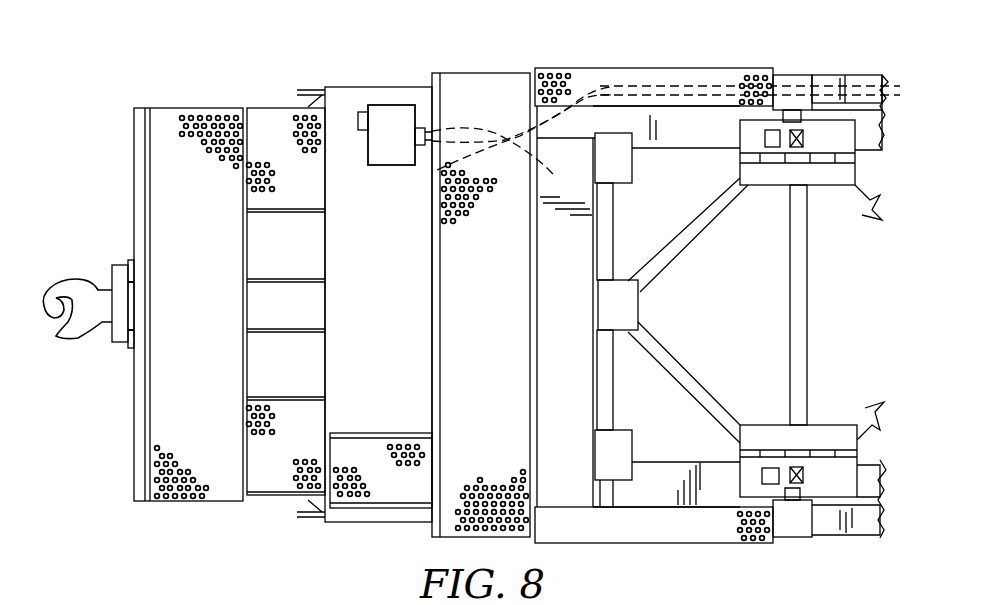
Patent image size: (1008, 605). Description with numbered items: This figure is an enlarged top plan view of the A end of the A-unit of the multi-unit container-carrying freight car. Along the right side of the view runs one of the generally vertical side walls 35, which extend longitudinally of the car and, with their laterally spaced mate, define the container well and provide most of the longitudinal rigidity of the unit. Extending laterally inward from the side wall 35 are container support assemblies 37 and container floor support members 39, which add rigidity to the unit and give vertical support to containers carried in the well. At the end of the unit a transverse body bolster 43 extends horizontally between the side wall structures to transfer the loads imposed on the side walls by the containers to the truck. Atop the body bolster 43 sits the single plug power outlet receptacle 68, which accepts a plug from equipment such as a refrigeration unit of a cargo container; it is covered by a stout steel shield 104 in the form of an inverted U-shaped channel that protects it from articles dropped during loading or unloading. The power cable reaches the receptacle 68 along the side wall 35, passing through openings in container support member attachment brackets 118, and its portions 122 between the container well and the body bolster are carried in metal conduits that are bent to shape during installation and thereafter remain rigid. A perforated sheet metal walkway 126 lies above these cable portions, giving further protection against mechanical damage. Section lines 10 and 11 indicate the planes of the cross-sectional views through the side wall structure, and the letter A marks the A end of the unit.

The transverse body bolster 43 is at (352, 96).
The walkway 126 is at (458, 93).
The single plug power outlet receptacle 68 is at (357, 122).
The shield 104 is at (392, 152).
The cable portions 122 is at (538, 176).
The container support member attachment bracket 118 is at (758, 113).
The side wall 35 is at (858, 77).
The container support assembly 37 is at (829, 141).
The container floor support member 39 is at (688, 242).
The section line 10- 10 is at (688, 38).
The section line 11- 11 is at (347, 212).
The lower cross bar A is at (568, 543).